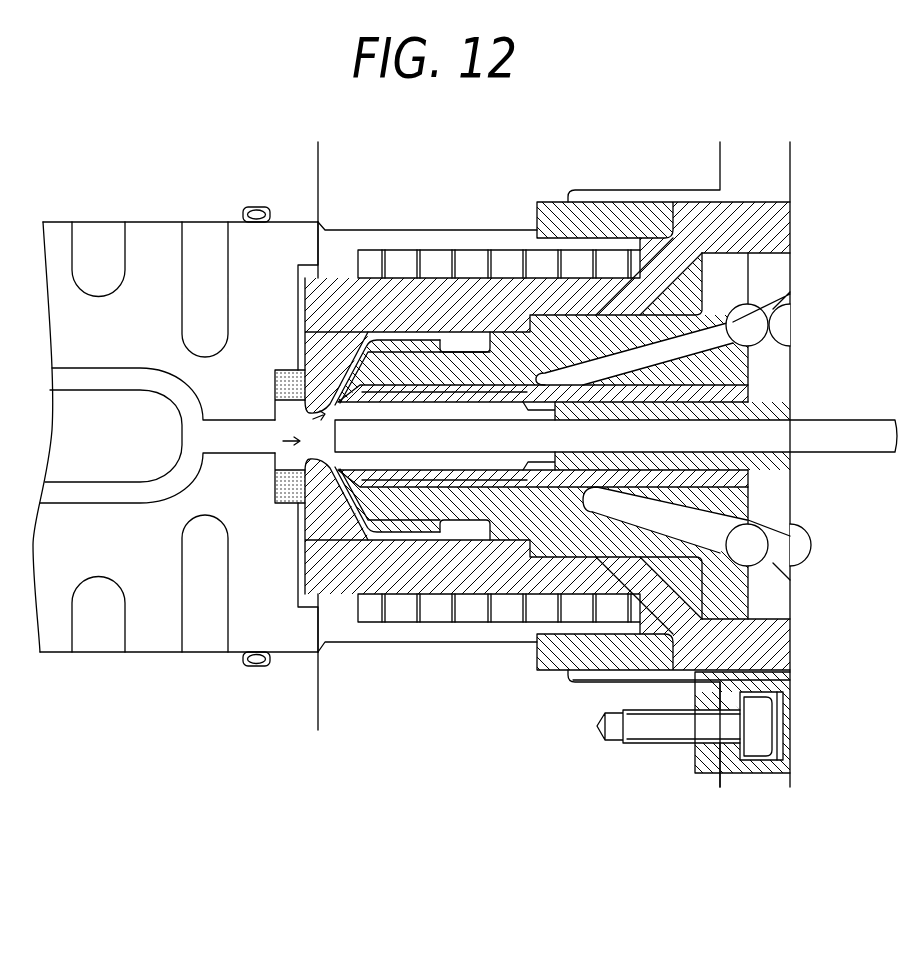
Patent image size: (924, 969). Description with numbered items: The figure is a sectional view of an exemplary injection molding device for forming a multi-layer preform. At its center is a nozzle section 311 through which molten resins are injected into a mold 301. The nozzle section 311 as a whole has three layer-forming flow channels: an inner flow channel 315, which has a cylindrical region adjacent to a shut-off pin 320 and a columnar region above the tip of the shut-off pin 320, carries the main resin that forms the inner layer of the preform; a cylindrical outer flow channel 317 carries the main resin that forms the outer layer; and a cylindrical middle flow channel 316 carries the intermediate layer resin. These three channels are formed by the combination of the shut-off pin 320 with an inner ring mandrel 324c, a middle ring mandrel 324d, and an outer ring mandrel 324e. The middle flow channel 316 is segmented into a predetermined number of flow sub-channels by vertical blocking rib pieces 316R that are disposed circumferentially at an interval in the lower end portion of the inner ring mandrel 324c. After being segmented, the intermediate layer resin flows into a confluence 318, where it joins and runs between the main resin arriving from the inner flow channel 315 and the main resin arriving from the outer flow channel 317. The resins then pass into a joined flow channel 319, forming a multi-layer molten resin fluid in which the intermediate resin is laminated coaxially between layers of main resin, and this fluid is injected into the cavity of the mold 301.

The mold 301 is at (150, 194).
The nozzle section 311 is at (497, 292).
The inner flow channel 315 is at (458, 396).
The middle flow channel 316 is at (438, 405).
The vertical blocking rib pieces 316R is at (340, 470).
The outer flow channel 317 is at (401, 384).
The confluence 318 is at (288, 420).
The joined flow channel 319 is at (275, 453).
The shut-off pin 320 is at (806, 430).
The inner ring mandrel 324c is at (387, 478).
The middle ring mandrel 324d is at (440, 516).
The outer ring mandrel 324e is at (530, 557).